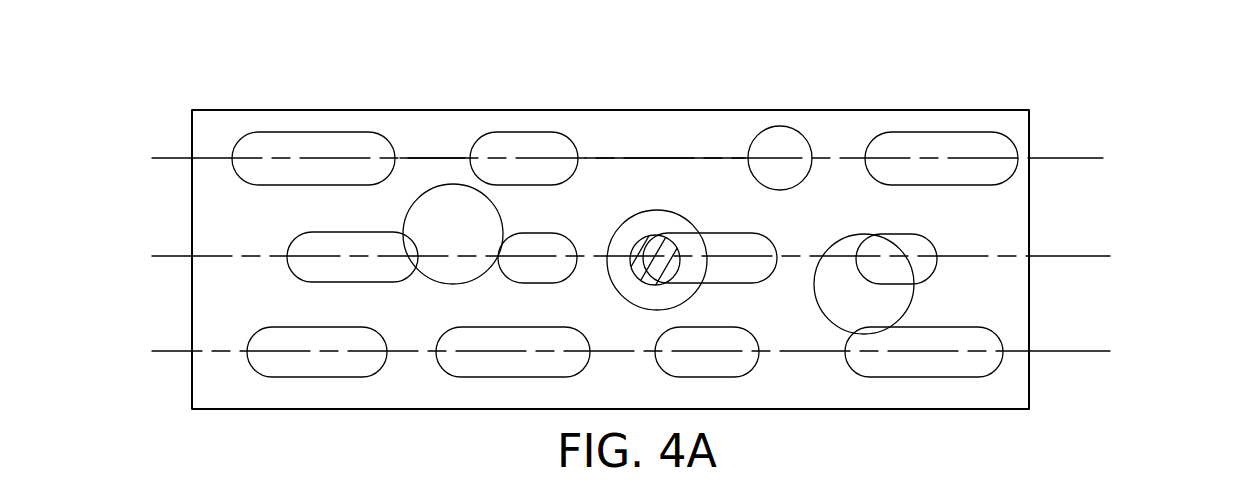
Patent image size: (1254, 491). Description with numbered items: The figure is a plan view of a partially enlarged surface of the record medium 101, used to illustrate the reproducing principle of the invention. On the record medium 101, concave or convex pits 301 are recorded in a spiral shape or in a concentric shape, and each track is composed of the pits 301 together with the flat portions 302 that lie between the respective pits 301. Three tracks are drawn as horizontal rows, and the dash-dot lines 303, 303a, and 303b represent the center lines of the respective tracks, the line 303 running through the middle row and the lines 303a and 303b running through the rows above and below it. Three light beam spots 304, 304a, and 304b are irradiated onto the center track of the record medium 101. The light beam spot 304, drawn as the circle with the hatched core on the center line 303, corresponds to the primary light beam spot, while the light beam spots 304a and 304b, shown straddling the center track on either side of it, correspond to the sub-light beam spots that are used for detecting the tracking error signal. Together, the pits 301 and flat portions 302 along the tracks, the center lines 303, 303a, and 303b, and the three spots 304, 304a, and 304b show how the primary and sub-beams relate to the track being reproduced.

The record medium 101 is at (1031, 122).
The pits 301 is at (520, 133).
The flat portions 302 is at (438, 160).
The center line 303 is at (1110, 256).
The center line 303a is at (1103, 158).
The center line 303b is at (1110, 351).
The light beam spot 304 is at (675, 214).
The light beam spot 304a is at (428, 191).
The light beam spot 304b is at (843, 238).